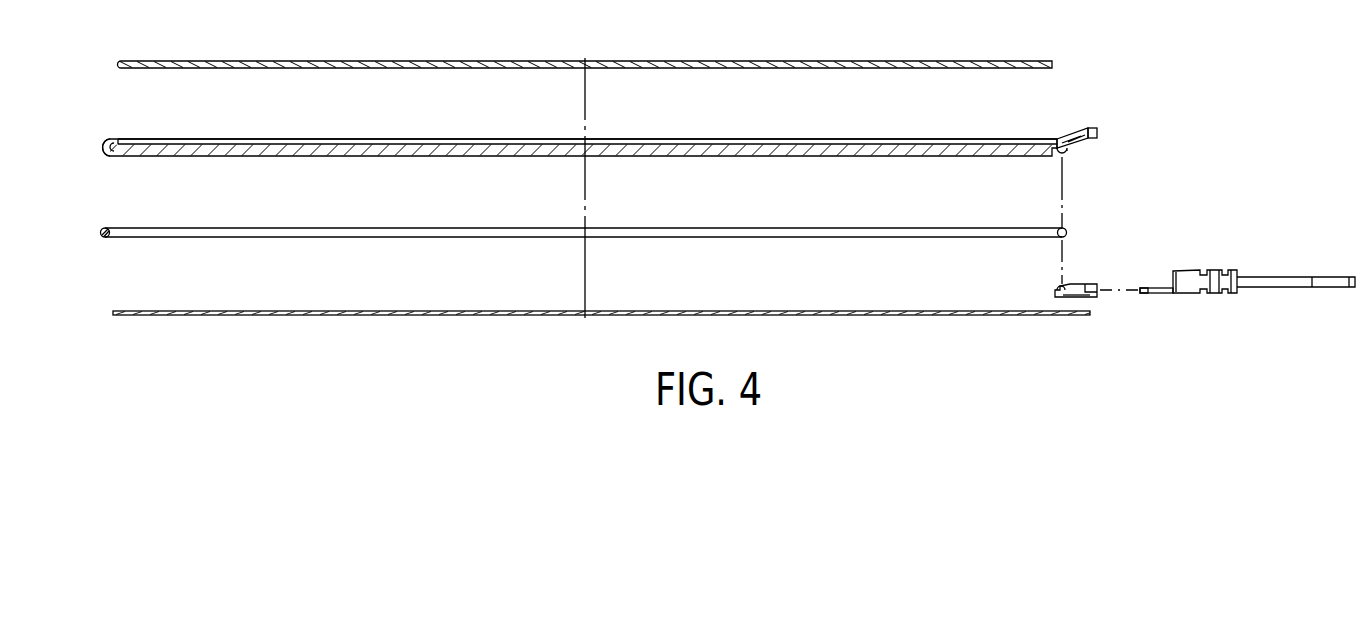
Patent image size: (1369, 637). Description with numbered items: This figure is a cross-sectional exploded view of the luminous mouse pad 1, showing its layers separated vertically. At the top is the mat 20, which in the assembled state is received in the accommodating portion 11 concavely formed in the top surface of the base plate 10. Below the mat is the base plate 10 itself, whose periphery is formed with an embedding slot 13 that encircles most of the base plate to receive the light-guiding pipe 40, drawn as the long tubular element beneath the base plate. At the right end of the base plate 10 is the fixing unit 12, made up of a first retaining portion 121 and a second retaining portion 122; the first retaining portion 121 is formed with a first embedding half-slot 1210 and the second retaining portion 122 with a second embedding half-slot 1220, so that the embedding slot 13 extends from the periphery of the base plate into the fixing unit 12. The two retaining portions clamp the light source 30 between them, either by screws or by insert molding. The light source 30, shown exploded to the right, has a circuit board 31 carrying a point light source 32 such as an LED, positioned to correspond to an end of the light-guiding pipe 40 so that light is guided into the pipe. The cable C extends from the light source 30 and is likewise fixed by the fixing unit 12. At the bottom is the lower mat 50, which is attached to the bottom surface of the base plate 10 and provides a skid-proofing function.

The luminous mouse pad 1 is at (1356, 46).
The base plate 10 is at (147, 136).
The accommodating portion 11 is at (405, 136).
The fixing unit 12 is at (1077, 128).
The first retaining portion 121 is at (1072, 133).
The first embedding half-slot 1210 is at (1069, 149).
The second retaining portion 122 is at (1063, 299).
The second embedding half-slot 1220 is at (1057, 287).
The embedding slot 13 is at (100, 147).
The mat 20 is at (150, 58).
The light source 30 is at (1160, 282).
The circuit board 31 is at (1162, 295).
The point light source 32 is at (1145, 287).
The light-guiding pipe 40 is at (159, 226).
The lower mat 50 is at (167, 308).
The cable C is at (1271, 276).